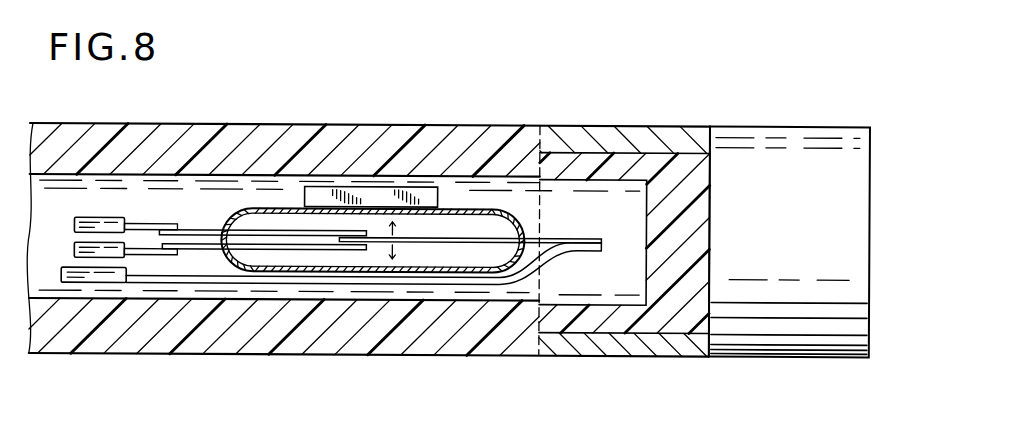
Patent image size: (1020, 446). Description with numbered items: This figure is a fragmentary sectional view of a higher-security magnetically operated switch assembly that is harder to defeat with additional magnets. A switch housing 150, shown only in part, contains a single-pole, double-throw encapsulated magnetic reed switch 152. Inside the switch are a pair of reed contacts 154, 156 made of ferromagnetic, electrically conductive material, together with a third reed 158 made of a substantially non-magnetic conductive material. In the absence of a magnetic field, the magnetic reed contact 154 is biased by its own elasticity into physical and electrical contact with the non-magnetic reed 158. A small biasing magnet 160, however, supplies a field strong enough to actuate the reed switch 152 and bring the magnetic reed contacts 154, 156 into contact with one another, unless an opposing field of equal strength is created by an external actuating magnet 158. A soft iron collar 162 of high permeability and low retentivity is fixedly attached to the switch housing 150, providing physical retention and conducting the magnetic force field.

The switch housing 150 is at (173, 122).
The encapsulated magnetic reed switch 152 is at (492, 207).
The reed contact 154 is at (455, 234).
The reed contact 156 is at (313, 249).
The non-magnetic reed / actuating magnet 158 is at (280, 228).
The biasing magnet 160 is at (363, 184).
The soft iron collar 162 is at (627, 124).